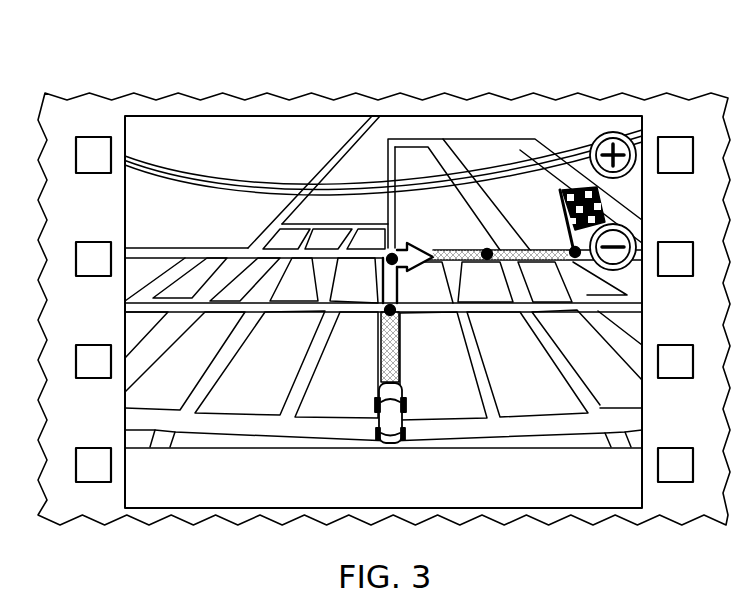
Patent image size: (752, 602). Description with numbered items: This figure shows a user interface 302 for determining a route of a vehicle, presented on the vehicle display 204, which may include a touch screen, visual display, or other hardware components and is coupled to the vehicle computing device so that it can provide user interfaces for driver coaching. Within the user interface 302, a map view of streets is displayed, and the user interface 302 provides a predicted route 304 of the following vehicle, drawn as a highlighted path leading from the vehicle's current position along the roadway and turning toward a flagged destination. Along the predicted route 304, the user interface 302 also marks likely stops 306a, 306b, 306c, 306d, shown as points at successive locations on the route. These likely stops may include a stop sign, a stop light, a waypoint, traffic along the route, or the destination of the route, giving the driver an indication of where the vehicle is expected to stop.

The vehicle display 204 is at (384, 269).
The user interface 302 is at (538, 116).
The predicted route 304 is at (402, 352).
The likely stop 306a is at (385, 316).
The likely stop 306b is at (389, 255).
The likely stop 306c is at (484, 250).
The likely stop 306d is at (570, 250).